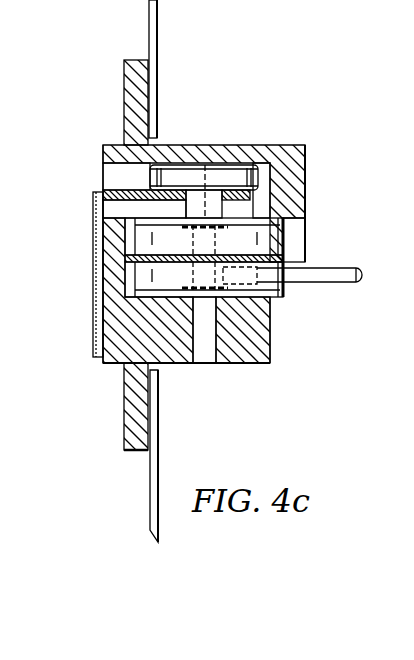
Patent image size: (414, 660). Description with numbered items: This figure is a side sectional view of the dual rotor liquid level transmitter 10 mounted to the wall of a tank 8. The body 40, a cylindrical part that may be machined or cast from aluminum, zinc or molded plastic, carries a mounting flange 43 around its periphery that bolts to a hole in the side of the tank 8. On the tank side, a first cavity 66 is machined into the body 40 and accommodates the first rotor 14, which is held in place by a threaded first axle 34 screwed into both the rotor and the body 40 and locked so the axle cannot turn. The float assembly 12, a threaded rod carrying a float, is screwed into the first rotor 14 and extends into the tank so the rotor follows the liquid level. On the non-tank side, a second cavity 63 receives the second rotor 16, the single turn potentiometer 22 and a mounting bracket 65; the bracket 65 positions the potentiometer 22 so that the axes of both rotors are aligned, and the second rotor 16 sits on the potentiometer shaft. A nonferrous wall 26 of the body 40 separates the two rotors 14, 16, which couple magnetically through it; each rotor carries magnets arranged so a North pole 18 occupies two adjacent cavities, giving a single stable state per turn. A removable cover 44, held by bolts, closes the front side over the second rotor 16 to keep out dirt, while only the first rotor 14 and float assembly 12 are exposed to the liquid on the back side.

The liquid level transmitter 10 is at (274, 118).
The tank 8 is at (158, 428).
The float assembly 12 is at (342, 283).
The first rotor 14 is at (136, 280).
The second rotor 16 is at (140, 238).
The North pole 18 is at (255, 205).
The potentiometer 22 is at (210, 178).
The nonferrous wall 26 is at (293, 257).
The first axle 34 is at (205, 363).
The body 40 is at (103, 147).
The flange 43 is at (125, 415).
The cover 44 is at (93, 325).
The second cavity 63 is at (116, 172).
The mounting bracket 65 is at (113, 183).
The first cavity 66 is at (270, 297).